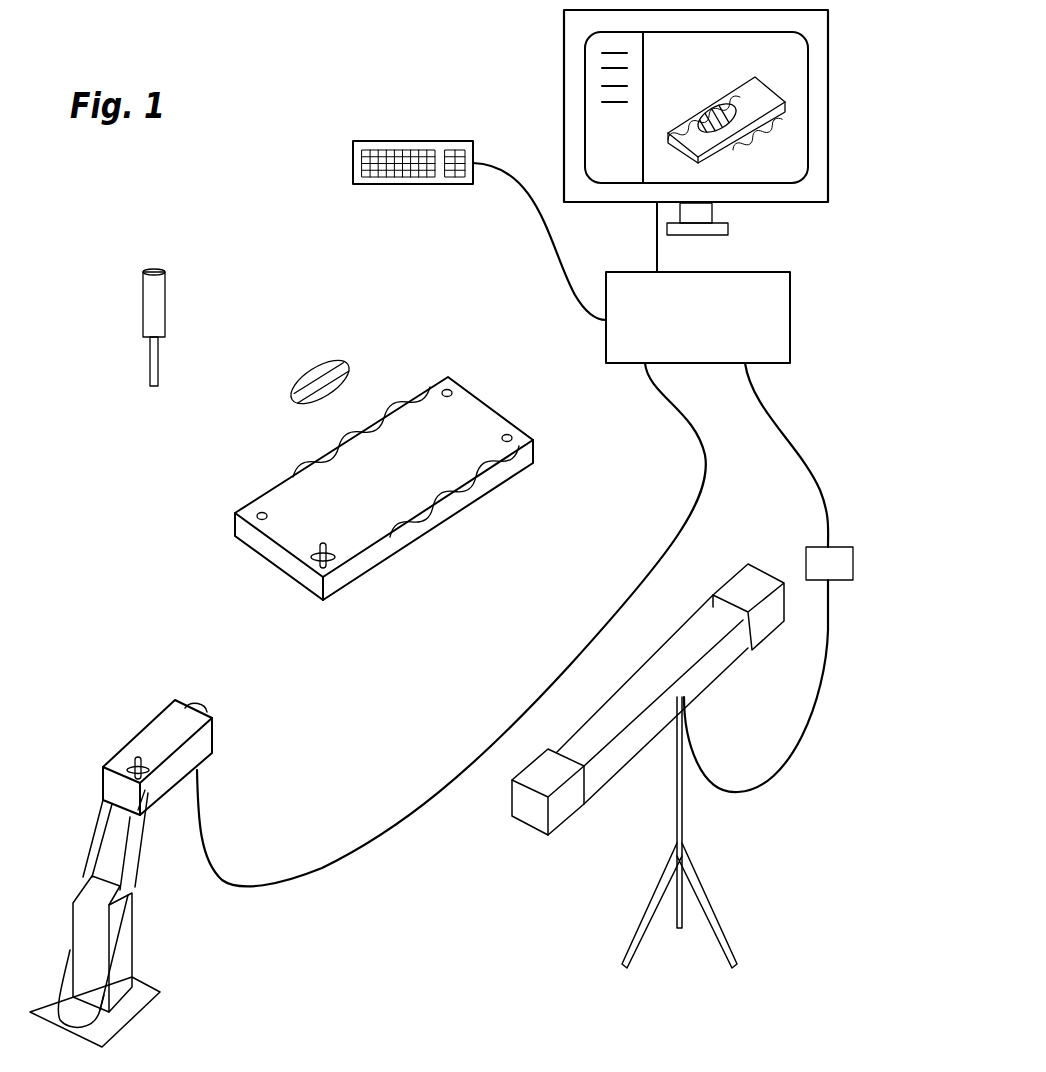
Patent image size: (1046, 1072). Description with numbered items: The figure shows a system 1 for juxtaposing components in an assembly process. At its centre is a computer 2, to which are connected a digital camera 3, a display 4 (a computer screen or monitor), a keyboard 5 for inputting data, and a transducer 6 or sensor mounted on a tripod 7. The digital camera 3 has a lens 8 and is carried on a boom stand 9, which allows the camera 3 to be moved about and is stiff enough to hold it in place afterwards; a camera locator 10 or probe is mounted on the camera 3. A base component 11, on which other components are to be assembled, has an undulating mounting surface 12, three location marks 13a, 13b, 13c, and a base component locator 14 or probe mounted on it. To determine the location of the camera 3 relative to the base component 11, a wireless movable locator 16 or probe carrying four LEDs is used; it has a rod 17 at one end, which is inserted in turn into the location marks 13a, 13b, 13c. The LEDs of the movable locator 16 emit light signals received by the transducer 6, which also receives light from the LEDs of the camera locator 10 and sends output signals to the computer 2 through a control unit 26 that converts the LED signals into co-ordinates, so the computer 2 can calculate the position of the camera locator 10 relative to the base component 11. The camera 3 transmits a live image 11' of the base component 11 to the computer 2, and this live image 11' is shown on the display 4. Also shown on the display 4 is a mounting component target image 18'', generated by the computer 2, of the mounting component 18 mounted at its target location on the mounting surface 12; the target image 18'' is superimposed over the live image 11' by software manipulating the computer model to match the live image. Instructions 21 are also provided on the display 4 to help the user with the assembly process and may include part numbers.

The system 1 is at (300, 227).
The computer 2 is at (790, 313).
The digital camera 3 is at (147, 718).
The display 4 is at (828, 168).
The keyboard 5 is at (390, 140).
The transducer 6 is at (568, 806).
The tripod 7 is at (718, 898).
The lens 8 is at (200, 705).
The boom stand 9 is at (138, 945).
The camera locator 10 is at (130, 762).
The base component 11 is at (384, 452).
The live image 11' is at (773, 120).
The mounting surface 12 is at (430, 490).
The location mark 13a is at (447, 388).
The location mark 13b is at (510, 442).
The location mark 13c is at (262, 512).
The base component locator 14 is at (330, 560).
The movable locator 16 is at (142, 292).
The rod 17 is at (150, 365).
The mounting component 18 is at (309, 353).
The mounting component target image 18'' is at (700, 83).
The instructions 21 is at (601, 68).
The control unit 26 is at (843, 581).